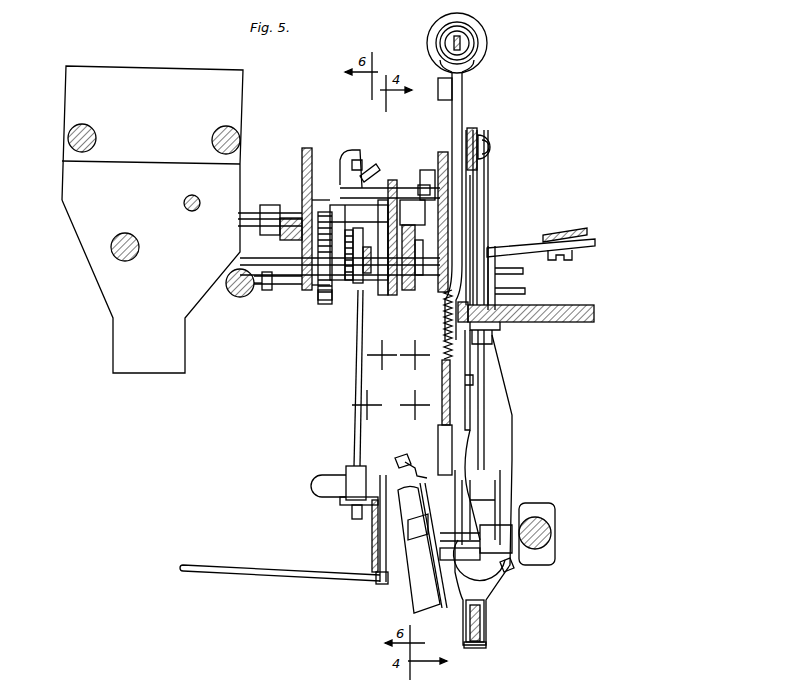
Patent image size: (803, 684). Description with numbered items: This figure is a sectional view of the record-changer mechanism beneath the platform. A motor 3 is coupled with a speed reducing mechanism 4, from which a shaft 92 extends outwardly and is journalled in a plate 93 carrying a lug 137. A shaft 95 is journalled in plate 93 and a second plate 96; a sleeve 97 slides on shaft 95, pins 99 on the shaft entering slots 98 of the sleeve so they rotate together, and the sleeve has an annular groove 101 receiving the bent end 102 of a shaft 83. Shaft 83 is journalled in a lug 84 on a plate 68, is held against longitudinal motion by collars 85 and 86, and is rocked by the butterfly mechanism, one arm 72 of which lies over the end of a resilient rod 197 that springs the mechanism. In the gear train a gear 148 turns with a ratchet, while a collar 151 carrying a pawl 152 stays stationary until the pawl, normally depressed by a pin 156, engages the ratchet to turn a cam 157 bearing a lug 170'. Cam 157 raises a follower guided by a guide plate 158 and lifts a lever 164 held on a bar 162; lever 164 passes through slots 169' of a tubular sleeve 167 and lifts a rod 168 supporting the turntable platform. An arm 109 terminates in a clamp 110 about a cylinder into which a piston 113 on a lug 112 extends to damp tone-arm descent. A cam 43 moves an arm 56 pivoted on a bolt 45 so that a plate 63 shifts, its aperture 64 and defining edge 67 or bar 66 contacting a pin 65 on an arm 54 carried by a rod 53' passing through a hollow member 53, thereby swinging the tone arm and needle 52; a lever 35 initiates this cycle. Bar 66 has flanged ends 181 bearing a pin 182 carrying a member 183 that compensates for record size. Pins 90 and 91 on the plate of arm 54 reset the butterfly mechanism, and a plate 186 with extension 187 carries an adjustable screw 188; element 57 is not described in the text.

The motor 3 is at (203, 80).
The speed reducing mechanism 4 is at (108, 262).
The shaft 92 is at (252, 212).
The lug 137 is at (292, 218).
The plate 93 is at (303, 152).
The pin 156 is at (348, 292).
The pawl 152 is at (340, 296).
The gear 148 is at (316, 292).
The lug 170' is at (372, 254).
The cam 157 is at (383, 298).
The sleeve 97 is at (391, 180).
The guide plate 158 is at (414, 292).
The collar 151 is at (355, 306).
The plate 96 is at (440, 156).
The shaft 95 is at (427, 172).
The pins 99 is at (419, 186).
The slots 98 is at (413, 212).
The annular groove 101 is at (374, 162).
The bent end 102 is at (356, 180).
The slots 169' is at (230, 308).
The rod 168 is at (256, 272).
The tubular sleeve 167 is at (246, 296).
The clamp 110 is at (428, 27).
The lug 112 is at (466, 38).
The piston 113 is at (480, 47).
The arm 109 is at (456, 218).
The knurled nut 57 is at (485, 130).
The bolt 45 is at (500, 140).
The arm 56 is at (489, 172).
The cam 43 is at (470, 205).
The bar 162 is at (590, 240).
The lever 164 is at (552, 260).
The defining edge 67 is at (467, 470).
The plate 63 is at (503, 400).
The shaft 83 is at (354, 360).
The collar 86 is at (350, 470).
The collar 85 is at (340, 501).
The lug 84 is at (370, 526).
The plate 68 is at (378, 553).
The arm 72 is at (376, 580).
The rod 197 is at (240, 566).
The pin 91 is at (400, 458).
The lever 35 is at (410, 596).
The pin 90 is at (415, 607).
The member 183 is at (413, 527).
The flanged ends 181 is at (522, 546).
The pin 182 is at (496, 586).
The bar 66 is at (460, 567).
The pin 65 is at (505, 510).
The arm 54 is at (490, 500).
The aperture 64 is at (487, 478).
The hollow member 53 is at (551, 534).
The rod 53' is at (552, 533).
The needle 52 is at (515, 574).
The plate 186 is at (482, 608).
The extension 187 is at (484, 626).
The adjustable screw 188 is at (486, 645).